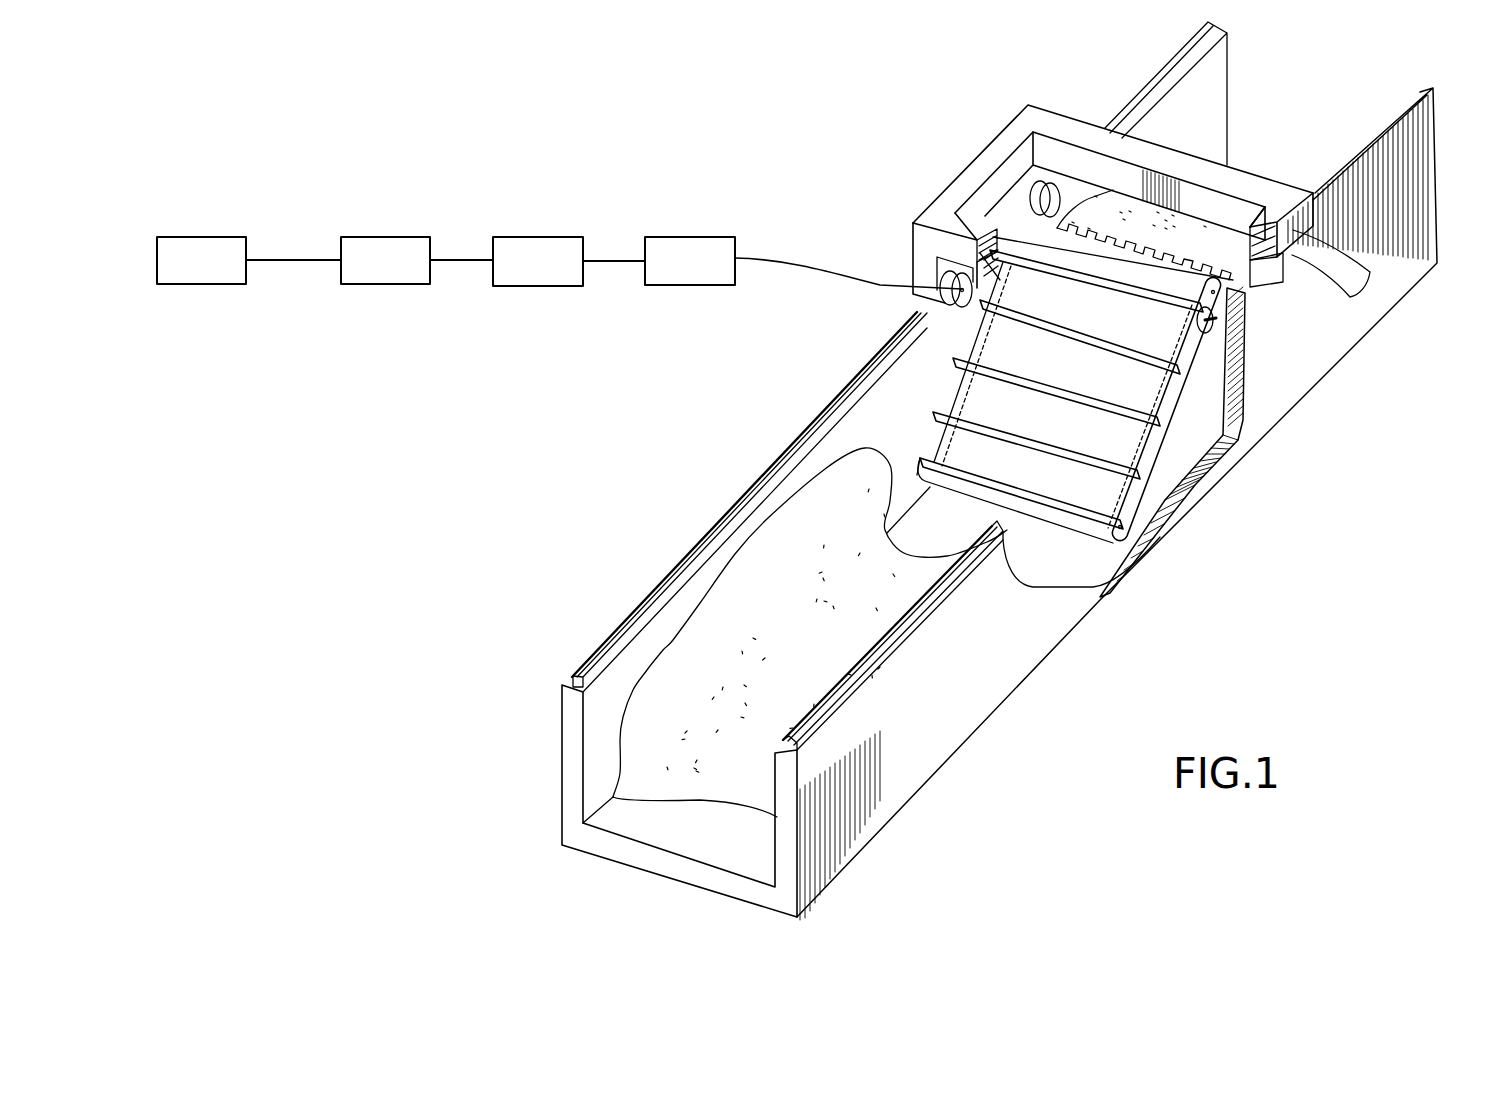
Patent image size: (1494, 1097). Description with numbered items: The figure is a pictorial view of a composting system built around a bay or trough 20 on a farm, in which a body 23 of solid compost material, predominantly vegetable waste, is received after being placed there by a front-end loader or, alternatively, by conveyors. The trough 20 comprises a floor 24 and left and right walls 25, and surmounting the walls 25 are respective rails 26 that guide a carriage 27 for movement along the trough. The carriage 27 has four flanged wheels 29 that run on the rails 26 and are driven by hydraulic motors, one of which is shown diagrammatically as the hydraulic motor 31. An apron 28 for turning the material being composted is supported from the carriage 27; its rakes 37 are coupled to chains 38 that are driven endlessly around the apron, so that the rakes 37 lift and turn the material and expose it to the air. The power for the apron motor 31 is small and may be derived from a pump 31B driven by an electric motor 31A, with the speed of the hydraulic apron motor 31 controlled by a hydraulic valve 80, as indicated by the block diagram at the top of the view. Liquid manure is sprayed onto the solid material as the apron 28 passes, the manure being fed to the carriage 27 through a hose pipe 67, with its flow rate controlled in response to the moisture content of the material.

The trough 20 is at (884, 333).
The body of solid compost material 23 is at (804, 542).
The floor 24 is at (704, 847).
The walls 25 is at (626, 672).
The rails 26 is at (711, 558).
The carriage 27 is at (928, 243).
The apron 28 is at (1050, 480).
The flanged wheels 29 is at (918, 315).
The hydraulic motor 31 is at (772, 225).
The electric motor 31A is at (203, 222).
The pump 31B is at (340, 222).
The rakes 37 is at (920, 460).
The chains 38 is at (977, 392).
The hose pipe 67 is at (1350, 280).
The hydraulic valve 80 is at (525, 205).